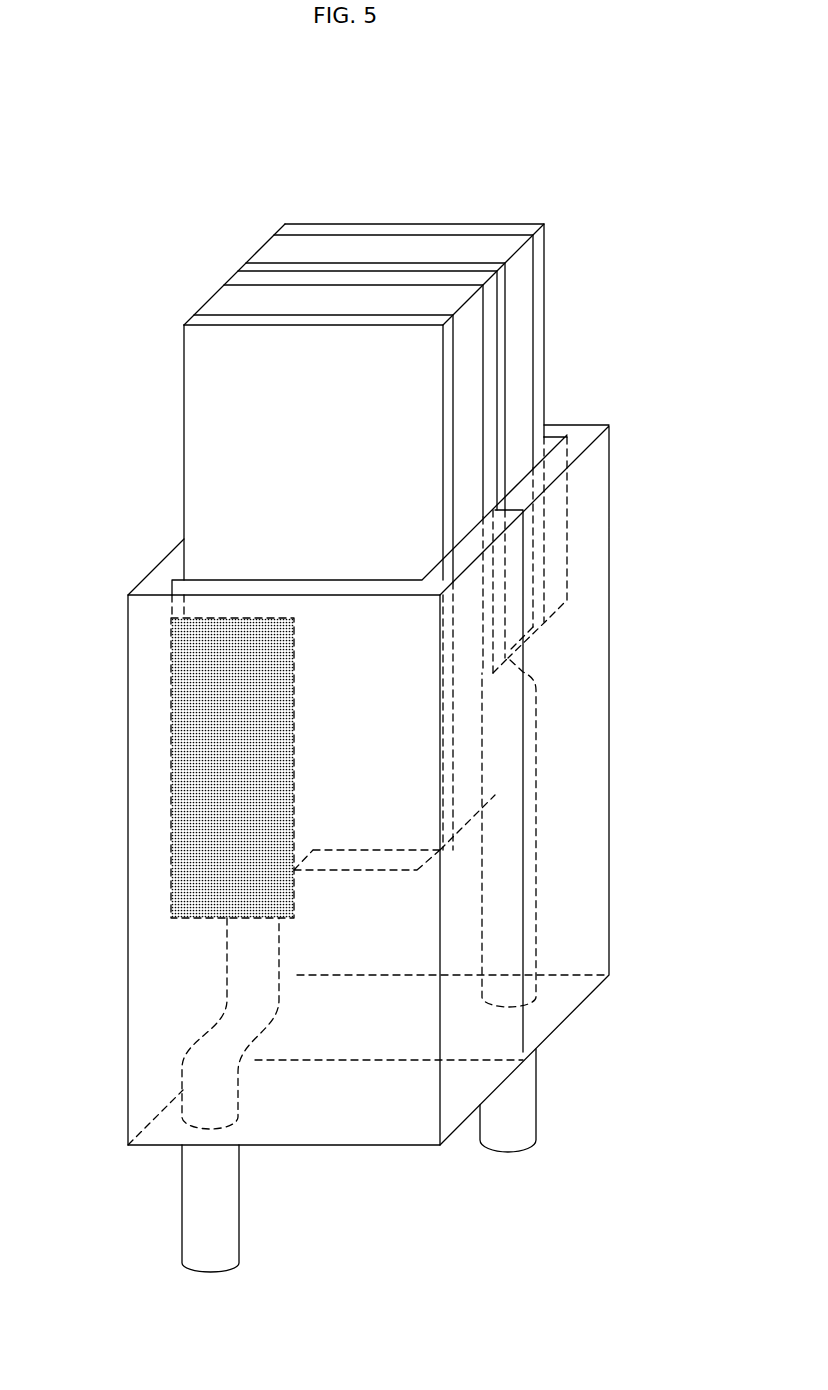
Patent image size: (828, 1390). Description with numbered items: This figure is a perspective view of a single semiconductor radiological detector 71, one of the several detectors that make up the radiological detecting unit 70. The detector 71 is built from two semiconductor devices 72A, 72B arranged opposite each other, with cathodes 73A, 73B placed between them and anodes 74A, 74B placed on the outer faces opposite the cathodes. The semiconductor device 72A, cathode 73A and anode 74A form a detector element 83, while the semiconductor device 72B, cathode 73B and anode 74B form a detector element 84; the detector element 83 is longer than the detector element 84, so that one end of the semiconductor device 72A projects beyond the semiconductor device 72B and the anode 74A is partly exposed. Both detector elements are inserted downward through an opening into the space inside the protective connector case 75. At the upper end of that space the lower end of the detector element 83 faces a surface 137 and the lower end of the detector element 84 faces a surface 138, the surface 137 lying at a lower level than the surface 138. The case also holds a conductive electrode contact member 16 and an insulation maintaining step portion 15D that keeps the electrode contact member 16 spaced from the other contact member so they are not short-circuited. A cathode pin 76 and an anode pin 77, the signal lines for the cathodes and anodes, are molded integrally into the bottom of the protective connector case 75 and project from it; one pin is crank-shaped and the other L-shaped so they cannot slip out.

The radiological detecting unit 70 is at (350, 735).
The semiconductor radiological detector 71 is at (299, 481).
The detector element 84 is at (397, 213).
The detector element 83 is at (181, 452).
The anode 74A is at (200, 320).
The semiconductor device 72A is at (235, 300).
The cathode 73A is at (250, 280).
The cathode 73B is at (265, 268).
The semiconductor device 72B is at (286, 250).
The anode 74B is at (308, 228).
The protective connector case 75 is at (148, 1020).
The electrode contact member 16 is at (172, 760).
The insulation maintaining step portion 15D is at (294, 897).
The surface 137 is at (453, 837).
The surface 138 is at (540, 630).
The cathode pin 76 is at (230, 1212).
The anode pin 77 is at (508, 1150).